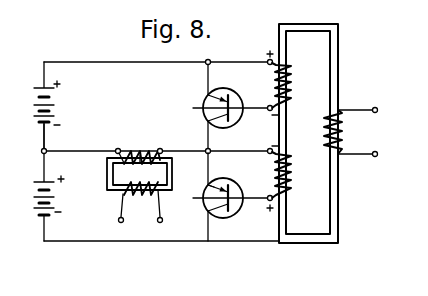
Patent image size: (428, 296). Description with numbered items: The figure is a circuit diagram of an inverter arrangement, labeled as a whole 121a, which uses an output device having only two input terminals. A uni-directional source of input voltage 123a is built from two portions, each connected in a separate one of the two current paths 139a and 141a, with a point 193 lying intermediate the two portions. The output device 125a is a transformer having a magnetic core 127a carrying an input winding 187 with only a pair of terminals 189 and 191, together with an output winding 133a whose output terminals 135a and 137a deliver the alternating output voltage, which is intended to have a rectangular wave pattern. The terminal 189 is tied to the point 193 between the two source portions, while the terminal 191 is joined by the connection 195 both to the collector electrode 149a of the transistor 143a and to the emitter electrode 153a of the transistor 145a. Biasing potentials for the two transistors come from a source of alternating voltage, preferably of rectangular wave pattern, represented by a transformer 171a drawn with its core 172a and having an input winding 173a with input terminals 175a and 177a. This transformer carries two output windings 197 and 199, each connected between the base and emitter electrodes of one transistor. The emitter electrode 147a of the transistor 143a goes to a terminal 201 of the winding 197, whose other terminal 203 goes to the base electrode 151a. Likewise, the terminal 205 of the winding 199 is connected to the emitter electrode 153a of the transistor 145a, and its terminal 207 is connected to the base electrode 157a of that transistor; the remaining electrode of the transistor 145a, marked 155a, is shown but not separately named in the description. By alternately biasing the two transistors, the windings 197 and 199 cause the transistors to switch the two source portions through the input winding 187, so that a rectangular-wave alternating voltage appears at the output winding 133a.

The oscillator circuit 121a is at (192, 268).
The uni-directional source of input voltage 123a is at (85, 148).
The output device 125a is at (97, 170).
The magnetic core 127a is at (107, 184).
The output winding 133a is at (140, 203).
The output terminal 135a is at (163, 221).
The output terminal 137a is at (118, 222).
The current path 139a is at (137, 95).
The current path 141a is at (100, 218).
The transistor 143a is at (218, 90).
The transistor 145a is at (222, 219).
The emitter electrode 147a is at (206, 96).
The collector electrode 149a is at (192, 108).
The base electrode 151a is at (238, 117).
The emitter electrode 153a is at (211, 181).
The base lead 155a is at (195, 202).
The base electrode 157a is at (237, 211).
The transformer 171a is at (377, 53).
The core leg 172a is at (338, 214).
The input winding 173a is at (342, 136).
The input terminal 175a is at (370, 101).
The input terminal 177a is at (367, 167).
The input winding 187 is at (140, 155).
The terminal 189 is at (117, 148).
The terminal 191 is at (161, 149).
The point 193 is at (41, 151).
The connection 195 is at (209, 149).
The output winding 197 is at (287, 72).
The output winding 199 is at (288, 189).
The terminal 201 is at (267, 61).
The terminal 203 is at (268, 106).
The terminal 205 is at (261, 141).
The terminal 207 is at (268, 196).